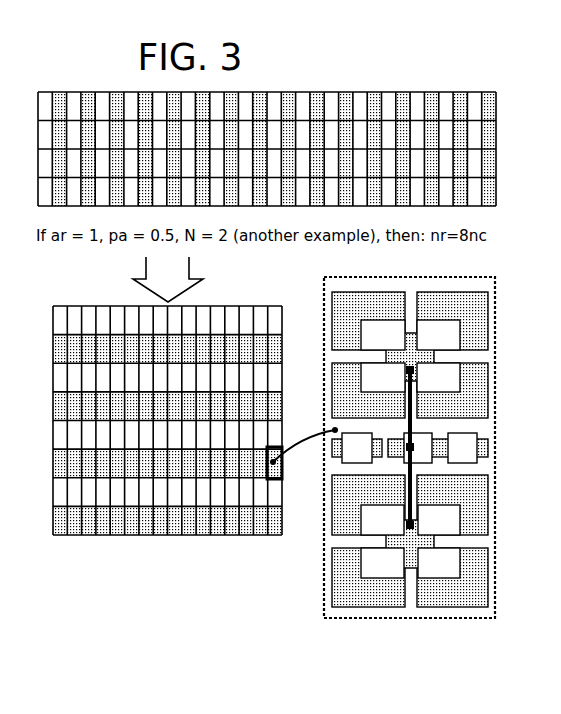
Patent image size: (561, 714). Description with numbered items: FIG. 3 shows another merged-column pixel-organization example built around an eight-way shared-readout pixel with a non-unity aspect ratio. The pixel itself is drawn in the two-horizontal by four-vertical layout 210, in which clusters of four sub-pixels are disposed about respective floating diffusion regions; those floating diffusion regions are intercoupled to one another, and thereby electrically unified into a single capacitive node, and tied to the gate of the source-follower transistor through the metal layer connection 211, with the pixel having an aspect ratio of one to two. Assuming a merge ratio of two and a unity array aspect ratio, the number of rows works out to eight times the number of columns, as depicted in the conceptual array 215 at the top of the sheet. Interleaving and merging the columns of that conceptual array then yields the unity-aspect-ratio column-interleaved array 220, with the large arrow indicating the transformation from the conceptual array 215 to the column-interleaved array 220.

The conceptual array 215 is at (483, 208).
The column-interleaved array 220 is at (110, 298).
The 8-way shared-readout pixel layout 210 is at (322, 296).
The metal layer connection 211 is at (413, 428).